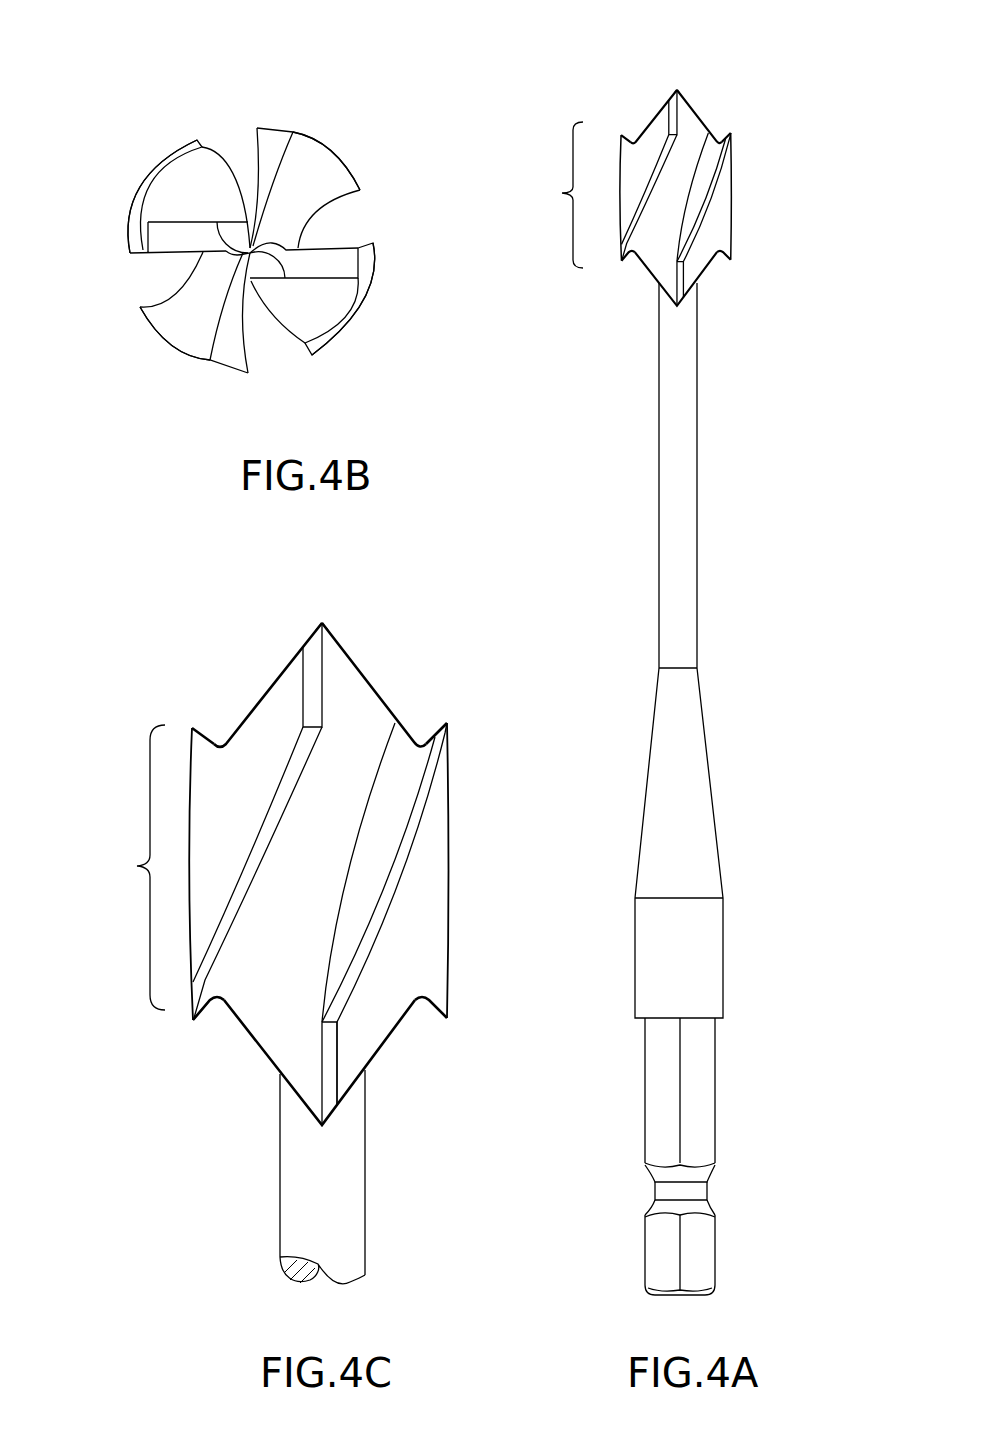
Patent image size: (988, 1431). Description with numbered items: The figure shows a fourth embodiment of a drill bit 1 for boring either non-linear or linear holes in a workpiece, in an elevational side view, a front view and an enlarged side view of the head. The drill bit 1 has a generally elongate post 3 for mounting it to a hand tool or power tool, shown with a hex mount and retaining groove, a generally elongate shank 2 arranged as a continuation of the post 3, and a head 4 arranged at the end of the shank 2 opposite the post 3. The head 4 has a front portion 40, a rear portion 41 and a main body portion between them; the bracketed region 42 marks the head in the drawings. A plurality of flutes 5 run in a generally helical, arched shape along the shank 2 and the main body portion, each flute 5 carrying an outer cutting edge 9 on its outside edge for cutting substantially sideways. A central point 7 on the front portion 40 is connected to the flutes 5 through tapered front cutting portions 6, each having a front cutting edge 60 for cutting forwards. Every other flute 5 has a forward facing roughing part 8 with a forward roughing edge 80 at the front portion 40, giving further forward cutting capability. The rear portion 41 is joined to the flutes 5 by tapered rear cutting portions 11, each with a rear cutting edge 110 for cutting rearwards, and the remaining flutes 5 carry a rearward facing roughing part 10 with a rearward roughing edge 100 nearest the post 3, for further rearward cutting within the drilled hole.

In FIG. 4A, the drill bit 1 is at (780, 700).
In FIG. 4A, the shank 2 is at (683, 532).
In FIG. 4A, the post 3 is at (710, 950).
In FIG. 4B, the head 4 is at (120, 320).
In FIG. 4C, the head 4 is at (475, 908).
In FIG. 4A, the head 4 is at (747, 226).
In FIG. 4B, the flutes 5 is at (198, 187).
In FIG. 4C, the flutes 5 is at (405, 787).
In FIG. 4A, the flutes 5 is at (705, 185).
In FIG. 4B, the front cutting portions 6 is at (345, 238).
In FIG. 4B, the central point 7 is at (247, 235).
In FIG. 4C, the central point 7 is at (327, 622).
In FIG. 4A, the central point 7 is at (677, 110).
In FIG. 4B, the forward facing roughing part 8 is at (118, 254).
In FIG. 4C, the forward facing roughing part 8 is at (447, 723).
In FIG. 4A, the forward facing roughing part 8 is at (622, 133).
In FIG. 4B, the outer cutting edge 9 is at (153, 185).
In FIG. 4C, the outer cutting edge 9 is at (432, 800).
In FIG. 4A, the outer cutting edge 9 is at (675, 219).
In FIG. 4C, the rearward facing roughing part 10 is at (198, 1020).
In FIG. 4A, the rearward facing roughing part 10 is at (623, 260).
In FIG. 4C, the rear cutting portions 11 is at (352, 1047).
In FIG. 4C, the front portion 40 is at (324, 598).
In FIG. 4A, the front portion 40 is at (677, 80).
In FIG. 4C, the rear portion 41 is at (268, 1080).
In FIG. 4A, the rear portion 41 is at (645, 313).
In FIG. 4C, the cutting head body 42 is at (135, 866).
In FIG. 4A, the cutting head body 42 is at (560, 193).
In FIG. 4B, the front cutting edge 60 is at (273, 172).
In FIG. 4C, the front cutting edge 60 is at (365, 672).
In FIG. 4A, the front cutting edge 60 is at (700, 113).
In FIG. 4B, the forward roughing edge 80 is at (140, 257).
In FIG. 4C, the forward roughing edge 80 is at (222, 747).
In FIG. 4C, the rearward roughing edge 100 is at (215, 1003).
In FIG. 4C, the rear cutting edge 110 is at (337, 1063).